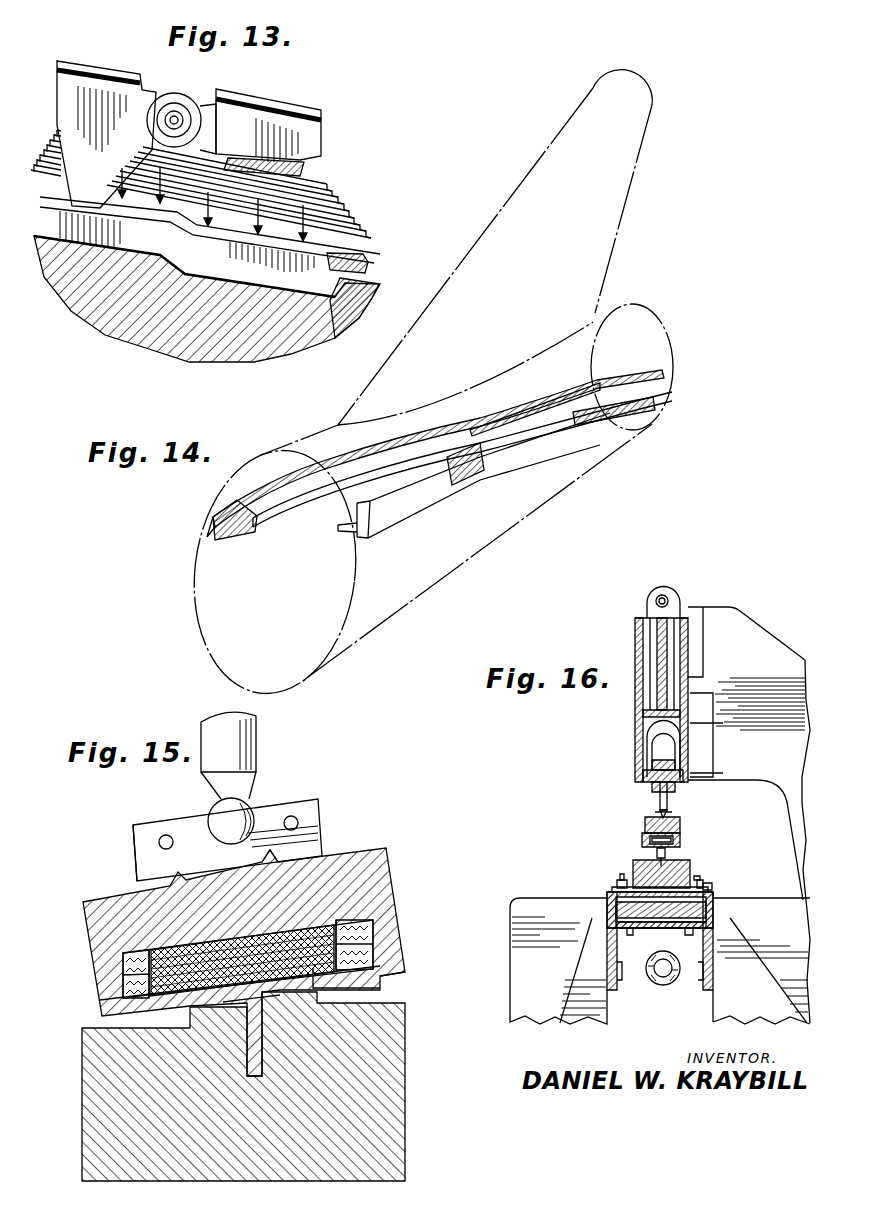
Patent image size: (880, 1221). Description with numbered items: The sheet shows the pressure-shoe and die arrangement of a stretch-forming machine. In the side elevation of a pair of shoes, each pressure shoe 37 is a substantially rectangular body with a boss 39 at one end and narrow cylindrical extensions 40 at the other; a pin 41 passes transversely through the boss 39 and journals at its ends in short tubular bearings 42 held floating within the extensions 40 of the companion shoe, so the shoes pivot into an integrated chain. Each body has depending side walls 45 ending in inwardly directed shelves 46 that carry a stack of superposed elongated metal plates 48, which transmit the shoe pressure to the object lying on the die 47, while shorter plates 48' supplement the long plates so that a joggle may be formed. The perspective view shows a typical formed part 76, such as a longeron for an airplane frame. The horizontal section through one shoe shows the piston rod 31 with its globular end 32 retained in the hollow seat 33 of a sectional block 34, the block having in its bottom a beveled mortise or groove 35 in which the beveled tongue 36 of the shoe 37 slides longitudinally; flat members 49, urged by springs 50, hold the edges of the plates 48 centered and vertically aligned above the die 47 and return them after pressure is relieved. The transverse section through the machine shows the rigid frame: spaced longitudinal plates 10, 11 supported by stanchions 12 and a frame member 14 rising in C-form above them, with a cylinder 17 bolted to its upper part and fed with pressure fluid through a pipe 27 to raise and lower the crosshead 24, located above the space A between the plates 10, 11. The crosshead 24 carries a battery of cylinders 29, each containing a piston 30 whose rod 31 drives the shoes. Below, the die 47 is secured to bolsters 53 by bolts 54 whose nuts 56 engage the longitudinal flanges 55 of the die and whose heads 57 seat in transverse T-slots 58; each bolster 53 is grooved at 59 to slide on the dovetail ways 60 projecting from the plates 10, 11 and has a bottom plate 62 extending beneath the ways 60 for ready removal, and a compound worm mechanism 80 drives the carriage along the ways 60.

In FIG. 13, the pressure shoe 37 is at (60, 109).
In FIG. 15, the pressure shoe 37 is at (93, 905).
In FIG. 16, the pressure shoe 37 is at (640, 838).
In FIG. 13, the cylindrical extensions 40 is at (173, 93).
In FIG. 13, the tubular bearings 42 is at (158, 118).
In FIG. 13, the pin 41 is at (164, 124).
In FIG. 13, the boss 39 is at (206, 134).
In FIG. 13, the elongated metal plates 48 is at (207, 185).
In FIG. 16, the elongated metal plates 48 is at (635, 855).
In FIG. 13, the shorter plates 48' is at (374, 228).
In FIG. 13, the blade strip 76 is at (175, 239).
In FIG. 14, the blade strip 76 is at (332, 455).
In FIG. 16, the blade strip 76 is at (688, 850).
In FIG. 13, the die 47 is at (238, 360).
In FIG. 15, the die 47 is at (92, 1096).
In FIG. 16, the die 47 is at (695, 862).
In FIG. 15, the piston rod 31 is at (257, 744).
In FIG. 16, the piston rod 31 is at (660, 797).
In FIG. 15, the hollow seats 33 is at (249, 804).
In FIG. 15, the globular ends 32 is at (214, 812).
In FIG. 16, the globular ends 32 is at (670, 826).
In FIG. 15, the blocks 34 is at (330, 808).
In FIG. 16, the blocks 34 is at (645, 825).
In FIG. 15, the beveled tongue 36 is at (152, 862).
In FIG. 15, the mortise or groove 35 is at (316, 866).
In FIG. 15, the flat members 49 is at (122, 960).
In FIG. 15, the springs 50 is at (122, 988).
In FIG. 15, the depending side walls 45 is at (95, 999).
In FIG. 15, the shelves 46 is at (382, 988).
In FIG. 16, the frame member 14 is at (760, 625).
In FIG. 16, the cylinder 17 is at (645, 607).
In FIG. 16, the pipe 27 is at (672, 598).
In FIG. 16, the crosshead 24 is at (636, 638).
In FIG. 16, the cylinders 29 is at (647, 724).
In FIG. 16, the piston 30 is at (655, 753).
In FIG. 16, the bolsters 53 is at (613, 890).
In FIG. 16, the bolts 54 is at (620, 875).
In FIG. 16, the longitudinal flanges 55 is at (697, 885).
In FIG. 16, the nuts 56 is at (617, 880).
In FIG. 16, the bolt heads 57 is at (712, 892).
In FIG. 16, the lateral groove 59 is at (617, 912).
In FIG. 16, the dovetail ways 60 is at (705, 912).
In FIG. 16, the T-slots 58 is at (647, 925).
In FIG. 16, the plate 62 is at (667, 929).
In FIG. 16, the longitudinal plate 10 is at (605, 958).
In FIG. 16, the longitudinal plate 11 is at (715, 977).
In FIG. 16, the stanchions 12 is at (512, 980).
In FIG. 16, the compound worm mechanism 80 is at (655, 977).
In FIG. 16, the space A is at (667, 1023).